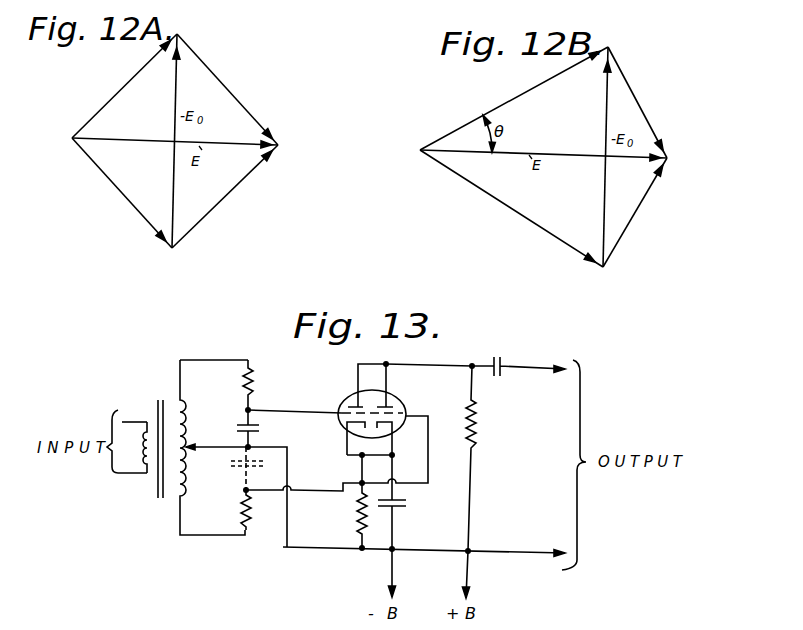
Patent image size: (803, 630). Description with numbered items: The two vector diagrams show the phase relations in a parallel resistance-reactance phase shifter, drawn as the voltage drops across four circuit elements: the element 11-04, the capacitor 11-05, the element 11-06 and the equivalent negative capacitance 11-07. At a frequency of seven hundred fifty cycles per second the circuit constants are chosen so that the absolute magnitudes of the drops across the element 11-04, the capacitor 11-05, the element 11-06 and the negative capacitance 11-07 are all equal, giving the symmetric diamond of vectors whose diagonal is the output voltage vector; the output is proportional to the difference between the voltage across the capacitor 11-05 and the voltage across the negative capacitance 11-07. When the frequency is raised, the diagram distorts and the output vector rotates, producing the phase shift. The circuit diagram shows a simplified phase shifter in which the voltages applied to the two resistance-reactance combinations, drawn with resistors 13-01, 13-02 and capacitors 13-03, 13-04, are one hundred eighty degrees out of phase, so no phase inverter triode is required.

In FIG. 12A, the circuit element 11-04 is at (124, 86).
In FIG. 12B, the circuit element 11-04 is at (514, 98).
In FIG. 12A, the capacitor 11-05 is at (229, 89).
In FIG. 12B, the capacitor 11-05 is at (651, 102).
In FIG. 12A, the circuit element 11-06 is at (120, 193).
In FIG. 12B, the circuit element 11-06 is at (511, 208).
In FIG. 12A, the equivalent negative capacitance 11-07 is at (225, 196).
In FIG. 12B, the equivalent negative capacitance 11-07 is at (647, 212).
In FIG. 13, the resistor 13-01 is at (251, 384).
In FIG. 13, the resistor 13-02 is at (249, 512).
In FIG. 13, the capacitor 13-03 is at (253, 430).
In FIG. 13, the capacitor (dashed) 13-04 is at (243, 458).